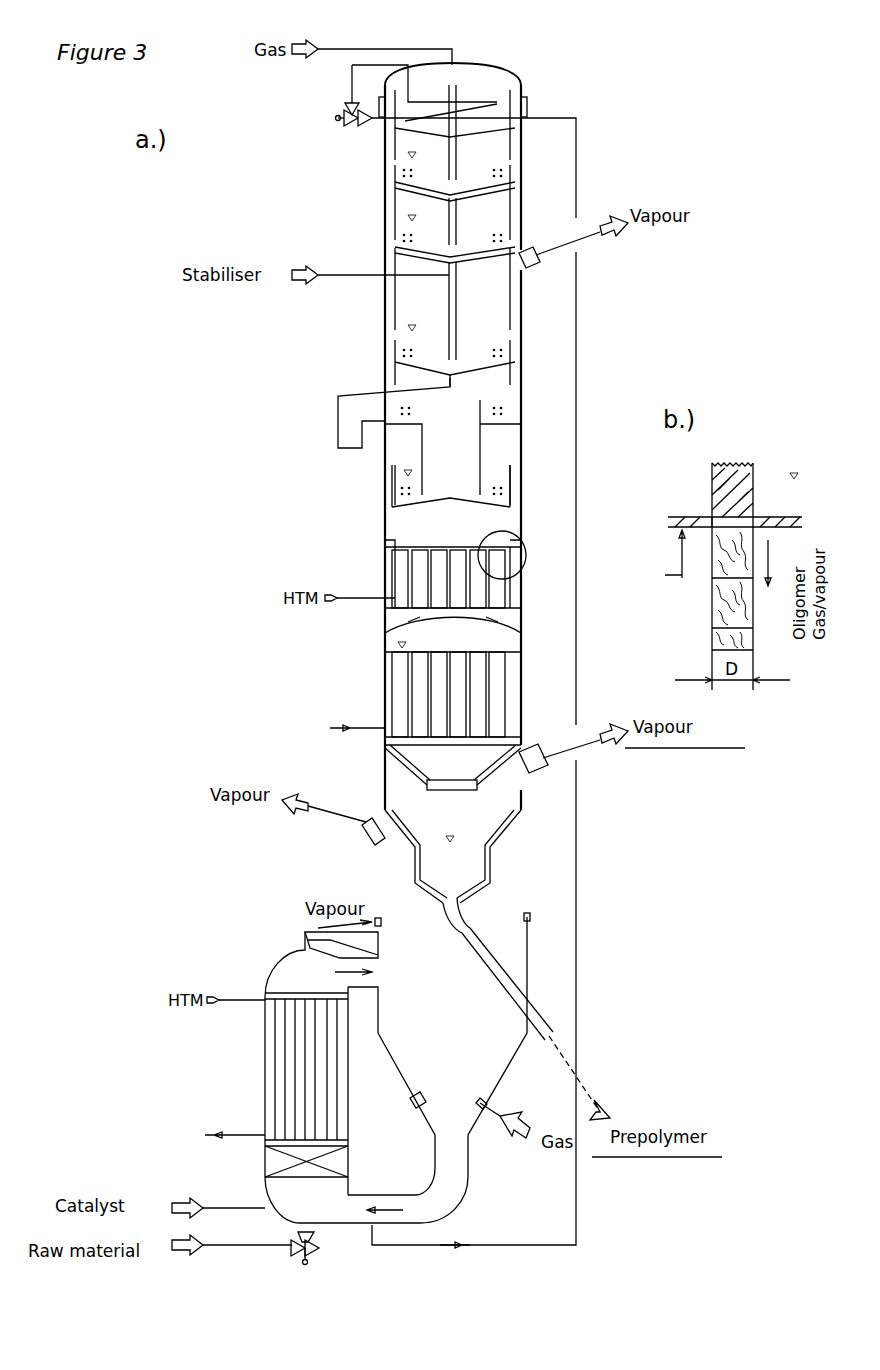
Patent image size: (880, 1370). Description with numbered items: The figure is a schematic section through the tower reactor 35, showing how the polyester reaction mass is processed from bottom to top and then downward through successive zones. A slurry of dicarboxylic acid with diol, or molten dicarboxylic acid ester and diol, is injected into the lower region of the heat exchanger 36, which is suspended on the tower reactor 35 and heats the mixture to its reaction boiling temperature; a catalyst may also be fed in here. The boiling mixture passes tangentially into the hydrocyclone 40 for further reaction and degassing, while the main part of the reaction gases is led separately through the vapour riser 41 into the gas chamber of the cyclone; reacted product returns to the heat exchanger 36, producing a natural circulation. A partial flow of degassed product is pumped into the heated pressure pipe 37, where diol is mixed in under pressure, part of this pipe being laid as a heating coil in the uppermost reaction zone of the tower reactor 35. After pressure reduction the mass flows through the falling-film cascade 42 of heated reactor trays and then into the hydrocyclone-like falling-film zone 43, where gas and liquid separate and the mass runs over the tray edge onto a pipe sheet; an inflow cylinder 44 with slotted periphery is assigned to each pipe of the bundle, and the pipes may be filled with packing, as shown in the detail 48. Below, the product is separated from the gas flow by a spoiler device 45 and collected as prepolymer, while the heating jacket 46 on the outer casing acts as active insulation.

The tower reactor 35 is at (385, 197).
The heat exchanger 36 is at (265, 1083).
The pressure pipe 37 is at (576, 150).
The hydrocyclone 40 is at (483, 1070).
The vapour riser 41 is at (305, 935).
The falling-film cascade 42 is at (505, 287).
The falling-film zone 43 is at (395, 608).
The inflow cylinder 44 is at (492, 527).
The spoiler device 45 is at (480, 792).
The heating jacket 46 is at (385, 490).
The plate detail 48 is at (717, 608).